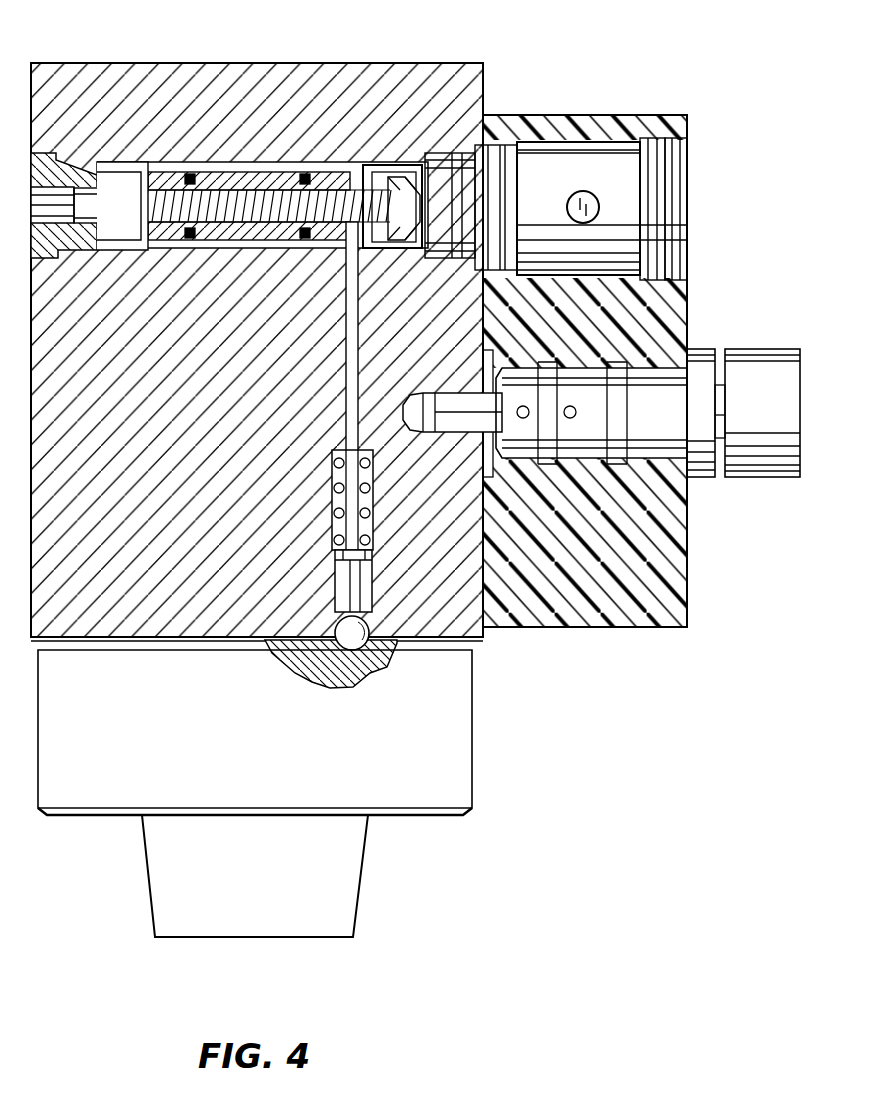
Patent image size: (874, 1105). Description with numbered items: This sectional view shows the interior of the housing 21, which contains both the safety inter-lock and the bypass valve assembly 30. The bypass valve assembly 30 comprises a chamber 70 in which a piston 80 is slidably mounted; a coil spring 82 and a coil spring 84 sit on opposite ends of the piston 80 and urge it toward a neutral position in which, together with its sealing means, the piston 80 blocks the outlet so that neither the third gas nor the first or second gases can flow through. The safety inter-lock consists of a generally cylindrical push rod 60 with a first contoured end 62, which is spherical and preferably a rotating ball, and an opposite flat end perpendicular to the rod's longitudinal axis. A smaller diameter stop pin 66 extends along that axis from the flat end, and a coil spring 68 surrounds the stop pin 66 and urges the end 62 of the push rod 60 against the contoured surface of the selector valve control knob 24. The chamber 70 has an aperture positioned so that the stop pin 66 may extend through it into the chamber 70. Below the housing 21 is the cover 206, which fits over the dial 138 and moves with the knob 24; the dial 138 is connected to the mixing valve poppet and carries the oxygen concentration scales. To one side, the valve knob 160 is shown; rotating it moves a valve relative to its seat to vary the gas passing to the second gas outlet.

The housing 21 is at (485, 102).
The selector valve control knob 24 is at (293, 657).
The bypass valve assembly 30 is at (310, 148).
The push rod 60 is at (363, 595).
The first contoured end 62 is at (347, 632).
The stop pin 66 is at (353, 502).
The coil spring 68 is at (367, 540).
The chamber 70 is at (203, 165).
The piston 80 is at (277, 165).
The coil spring 82 is at (357, 165).
The coil spring 84 is at (167, 168).
The dial 138 is at (350, 877).
The valve knob 160 is at (756, 362).
The cover 206 is at (438, 763).